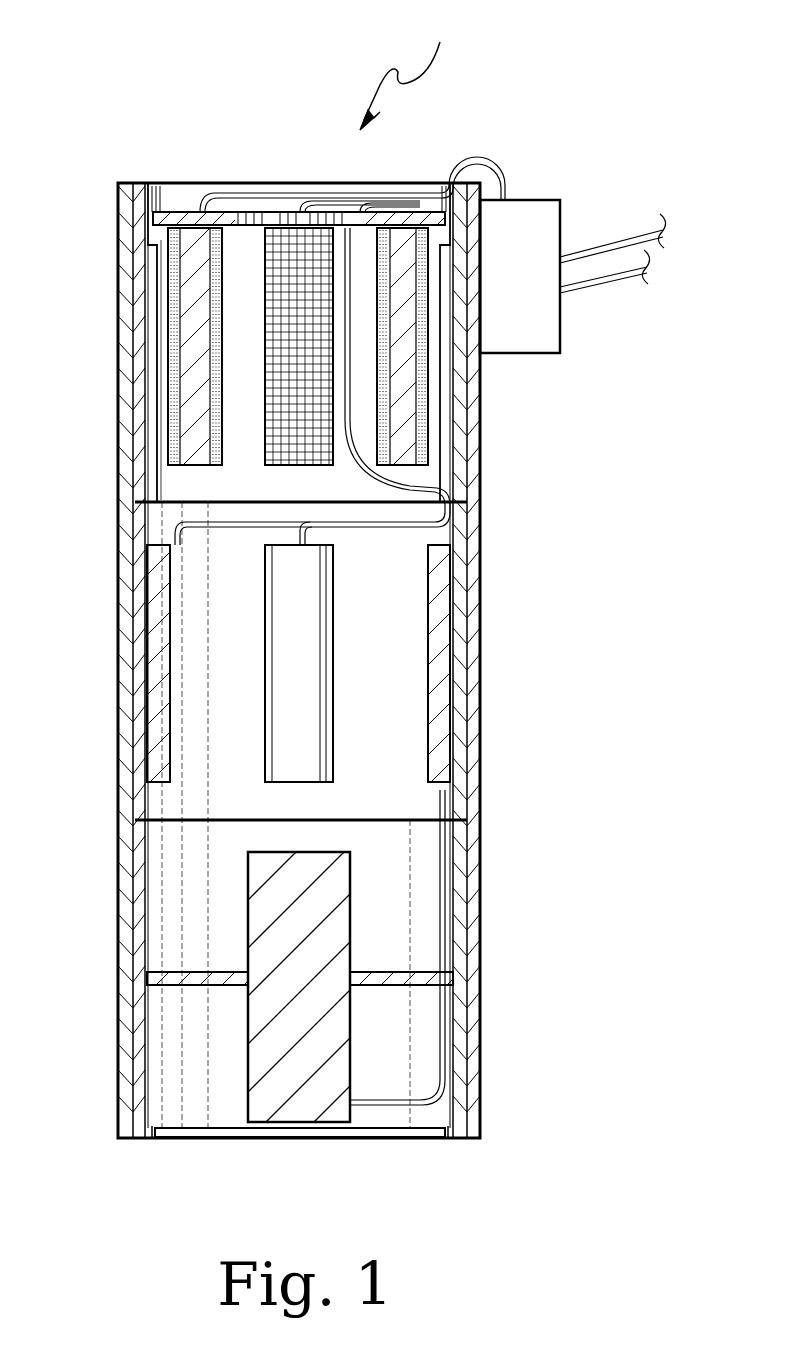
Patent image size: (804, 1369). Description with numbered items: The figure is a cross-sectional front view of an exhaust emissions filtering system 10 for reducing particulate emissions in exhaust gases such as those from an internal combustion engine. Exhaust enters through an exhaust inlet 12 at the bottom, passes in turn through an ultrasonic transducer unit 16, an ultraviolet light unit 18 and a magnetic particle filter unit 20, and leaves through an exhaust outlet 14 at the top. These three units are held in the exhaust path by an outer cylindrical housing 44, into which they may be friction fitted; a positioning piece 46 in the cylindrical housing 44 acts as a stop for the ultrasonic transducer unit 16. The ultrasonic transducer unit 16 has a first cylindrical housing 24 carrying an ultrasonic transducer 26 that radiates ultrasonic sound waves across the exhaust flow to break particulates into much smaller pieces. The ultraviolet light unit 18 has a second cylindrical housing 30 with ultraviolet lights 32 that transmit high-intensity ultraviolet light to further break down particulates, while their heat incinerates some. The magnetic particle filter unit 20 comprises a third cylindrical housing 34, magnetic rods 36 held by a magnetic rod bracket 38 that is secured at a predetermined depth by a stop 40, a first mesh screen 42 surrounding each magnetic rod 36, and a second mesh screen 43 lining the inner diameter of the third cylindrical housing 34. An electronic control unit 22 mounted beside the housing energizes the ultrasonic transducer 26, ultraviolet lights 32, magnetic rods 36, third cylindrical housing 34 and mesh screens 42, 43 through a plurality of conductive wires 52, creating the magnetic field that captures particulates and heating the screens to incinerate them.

The exhaust emissions filtering system 10 is at (407, 70).
The exhaust inlet 12 is at (312, 1140).
The exhaust outlet 14 is at (195, 182).
The ultrasonic transducer unit 16 is at (388, 917).
The ultraviolet light unit 18 is at (388, 632).
The magnetic particle filter unit 20 is at (368, 410).
The electronic control unit 22 is at (560, 218).
The first cylindrical housing 24 is at (120, 748).
The ultrasonic transducer 26 is at (265, 1028).
The second cylindrical housing 30 is at (465, 715).
The ultraviolet light 32 is at (148, 640).
The third cylindrical housing 34 is at (140, 480).
The magnetic rod 36 is at (188, 273).
The magnetic rod bracket 38 is at (172, 217).
The stop 40 is at (133, 230).
The first mesh screen 42 is at (175, 395).
The second mesh screen 43 is at (150, 438).
The cylindrical housing 44 is at (118, 890).
The positioning piece 46 is at (152, 1140).
The conductive wires 52 is at (488, 165).